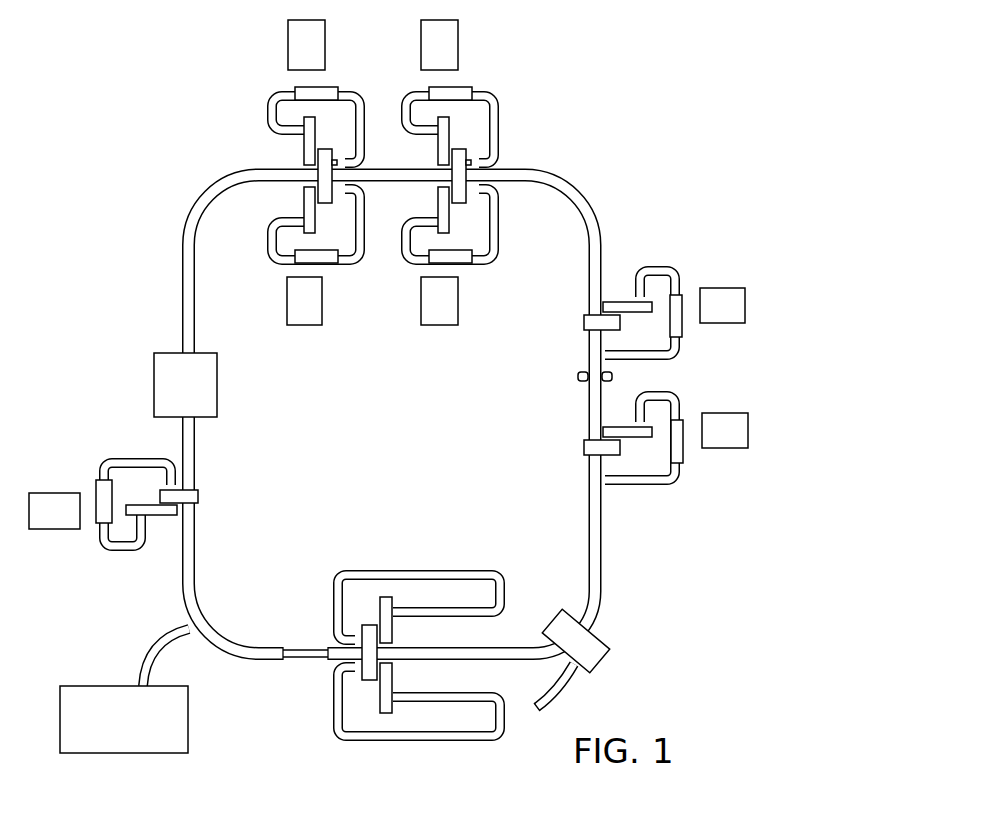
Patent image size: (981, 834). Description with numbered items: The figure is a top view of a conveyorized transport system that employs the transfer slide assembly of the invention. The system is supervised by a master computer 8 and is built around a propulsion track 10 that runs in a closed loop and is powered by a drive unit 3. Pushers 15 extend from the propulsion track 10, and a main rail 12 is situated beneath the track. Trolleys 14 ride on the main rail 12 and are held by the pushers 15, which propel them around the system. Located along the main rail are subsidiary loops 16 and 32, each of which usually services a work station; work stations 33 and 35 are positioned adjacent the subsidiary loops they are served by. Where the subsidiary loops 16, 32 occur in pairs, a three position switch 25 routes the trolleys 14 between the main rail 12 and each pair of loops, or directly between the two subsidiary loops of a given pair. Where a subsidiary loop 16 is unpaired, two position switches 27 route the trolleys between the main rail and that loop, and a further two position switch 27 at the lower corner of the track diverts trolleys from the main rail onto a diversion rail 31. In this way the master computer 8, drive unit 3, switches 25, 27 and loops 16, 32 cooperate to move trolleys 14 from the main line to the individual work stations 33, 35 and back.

The drive unit 3 is at (217, 383).
The master computer 8 is at (188, 713).
The propulsion track 10 is at (598, 548).
The main rail 12 is at (308, 660).
The trolleys 14 is at (580, 376).
The pushers 15 is at (581, 383).
The subsidiary loop 16 is at (367, 99).
The three position switch 25 is at (359, 166).
The two position switch 27 is at (603, 298).
The diversion rail 31 is at (563, 681).
The subsidiary loop 32 is at (364, 256).
The work station 33 is at (453, 20).
The work station 35 is at (322, 323).